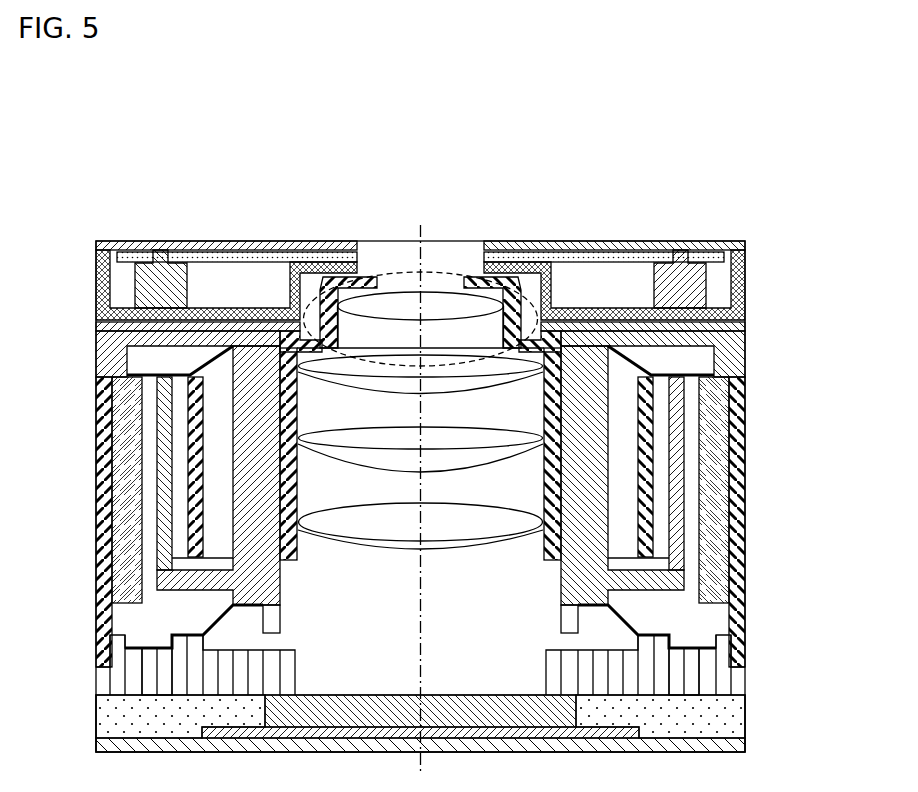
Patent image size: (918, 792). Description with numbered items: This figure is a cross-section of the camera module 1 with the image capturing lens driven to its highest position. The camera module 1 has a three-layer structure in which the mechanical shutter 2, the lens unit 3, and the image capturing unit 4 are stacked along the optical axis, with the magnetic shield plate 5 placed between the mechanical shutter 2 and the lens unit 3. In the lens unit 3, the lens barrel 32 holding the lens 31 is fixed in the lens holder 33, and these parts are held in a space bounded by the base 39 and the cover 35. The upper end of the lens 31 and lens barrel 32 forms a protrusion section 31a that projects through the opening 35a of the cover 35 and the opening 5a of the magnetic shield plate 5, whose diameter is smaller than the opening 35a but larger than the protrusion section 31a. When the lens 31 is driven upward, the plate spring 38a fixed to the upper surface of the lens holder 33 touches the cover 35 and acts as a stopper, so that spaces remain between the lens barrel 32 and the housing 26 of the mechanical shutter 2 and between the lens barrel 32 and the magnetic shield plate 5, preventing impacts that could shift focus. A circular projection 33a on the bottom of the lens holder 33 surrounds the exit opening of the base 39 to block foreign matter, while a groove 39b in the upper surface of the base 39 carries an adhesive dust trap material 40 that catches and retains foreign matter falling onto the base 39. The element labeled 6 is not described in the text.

The camera module 1 is at (717, 202).
The mechanical shutter 2 is at (92, 245).
The lens unit 3 is at (92, 336).
The image capturing unit 4 is at (92, 696).
The magnetic shield plate 5 is at (746, 324).
The opening 5a is at (558, 332).
The lens retaining bracket 6 is at (523, 296).
The housing 26 is at (746, 279).
The lens 31 is at (450, 310).
The protrusion section 31a is at (452, 272).
The lens barrel 32 is at (541, 553).
The lens holder 33 is at (572, 575).
The projection 33a is at (277, 628).
The cover 35 is at (738, 348).
The opening 35a is at (253, 318).
The plate spring 38a is at (625, 357).
The base 39 is at (737, 677).
The groove 39b is at (687, 652).
The dust trap material 40 is at (707, 650).